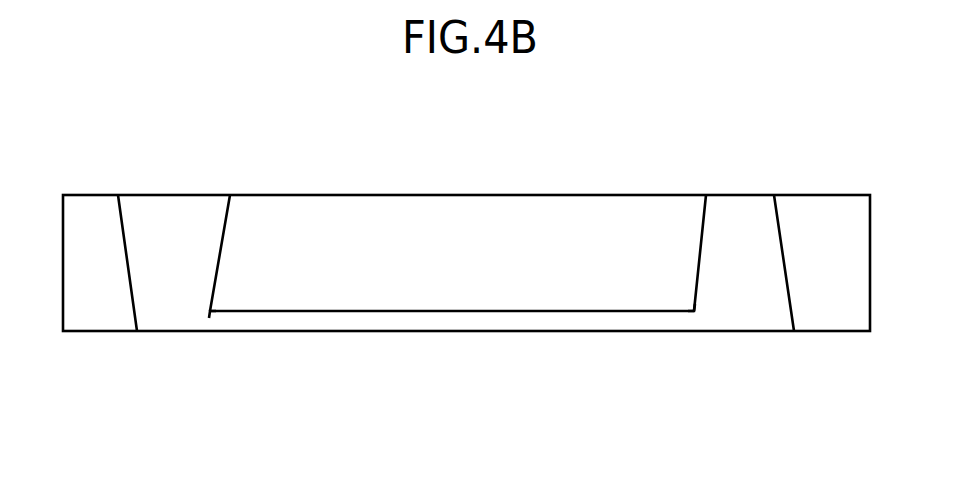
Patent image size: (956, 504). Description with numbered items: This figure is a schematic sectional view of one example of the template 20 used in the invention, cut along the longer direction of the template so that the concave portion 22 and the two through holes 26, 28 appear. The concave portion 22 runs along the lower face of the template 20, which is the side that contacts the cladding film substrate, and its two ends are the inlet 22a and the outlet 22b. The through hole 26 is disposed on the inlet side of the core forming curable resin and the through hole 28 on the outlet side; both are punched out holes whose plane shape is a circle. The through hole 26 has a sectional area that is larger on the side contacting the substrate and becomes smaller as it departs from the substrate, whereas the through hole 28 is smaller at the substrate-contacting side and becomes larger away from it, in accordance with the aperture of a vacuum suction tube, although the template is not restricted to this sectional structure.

The template 20 is at (535, 167).
The concave portion 22 is at (620, 322).
The inlet 22a is at (695, 320).
The outlet 22b is at (211, 311).
The through hole 26 is at (738, 205).
The through hole 28 is at (176, 217).